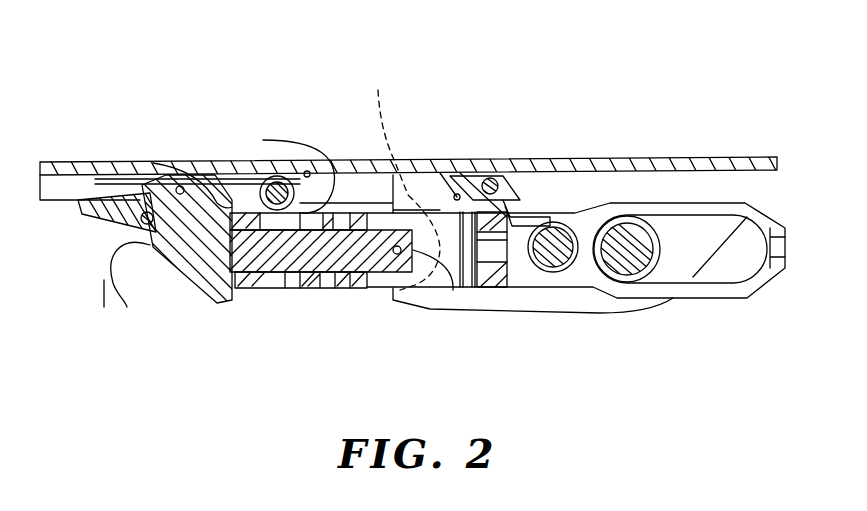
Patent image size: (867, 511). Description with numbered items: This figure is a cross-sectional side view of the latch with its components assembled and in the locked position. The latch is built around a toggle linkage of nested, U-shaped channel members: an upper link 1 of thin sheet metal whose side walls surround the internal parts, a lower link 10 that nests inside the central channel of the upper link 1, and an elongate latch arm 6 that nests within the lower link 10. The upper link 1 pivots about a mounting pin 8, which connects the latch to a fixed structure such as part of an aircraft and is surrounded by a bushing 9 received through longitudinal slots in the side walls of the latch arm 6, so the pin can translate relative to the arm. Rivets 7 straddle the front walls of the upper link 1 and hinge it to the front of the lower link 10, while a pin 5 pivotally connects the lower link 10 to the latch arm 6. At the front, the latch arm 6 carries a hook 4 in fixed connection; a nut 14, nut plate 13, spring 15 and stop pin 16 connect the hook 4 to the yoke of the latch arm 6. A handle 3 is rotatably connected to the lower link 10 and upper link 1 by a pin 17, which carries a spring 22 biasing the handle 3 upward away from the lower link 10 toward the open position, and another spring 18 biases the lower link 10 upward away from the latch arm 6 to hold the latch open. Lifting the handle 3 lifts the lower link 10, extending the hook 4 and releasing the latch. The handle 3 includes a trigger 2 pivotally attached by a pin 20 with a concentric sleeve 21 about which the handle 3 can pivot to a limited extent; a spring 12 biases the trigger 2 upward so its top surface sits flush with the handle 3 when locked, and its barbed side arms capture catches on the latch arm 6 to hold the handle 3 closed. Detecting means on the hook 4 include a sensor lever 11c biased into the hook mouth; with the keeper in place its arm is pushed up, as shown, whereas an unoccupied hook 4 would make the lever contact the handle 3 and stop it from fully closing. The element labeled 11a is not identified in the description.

The upper link 1 is at (578, 305).
The trigger 2 is at (190, 162).
The handle 3 is at (162, 162).
The hook 4 is at (100, 203).
The pin 5 is at (525, 215).
The latch arm 6 is at (703, 213).
The rivets 7 is at (406, 172).
The mounting pin 8 is at (628, 253).
The bushing 9 is at (660, 247).
The lower link 10 is at (433, 297).
The tab 11a is at (110, 185).
The sensor lever 11c is at (80, 214).
The spring 12 is at (227, 213).
The nut plate 13 is at (285, 288).
The nut 14 is at (322, 288).
The spring 15 is at (332, 288).
The stop pin 16 is at (457, 287).
The pin 17 is at (490, 178).
The spring 18 is at (530, 275).
The pin 20 is at (258, 178).
The sleeve 21 is at (338, 170).
The spring 22 is at (457, 193).